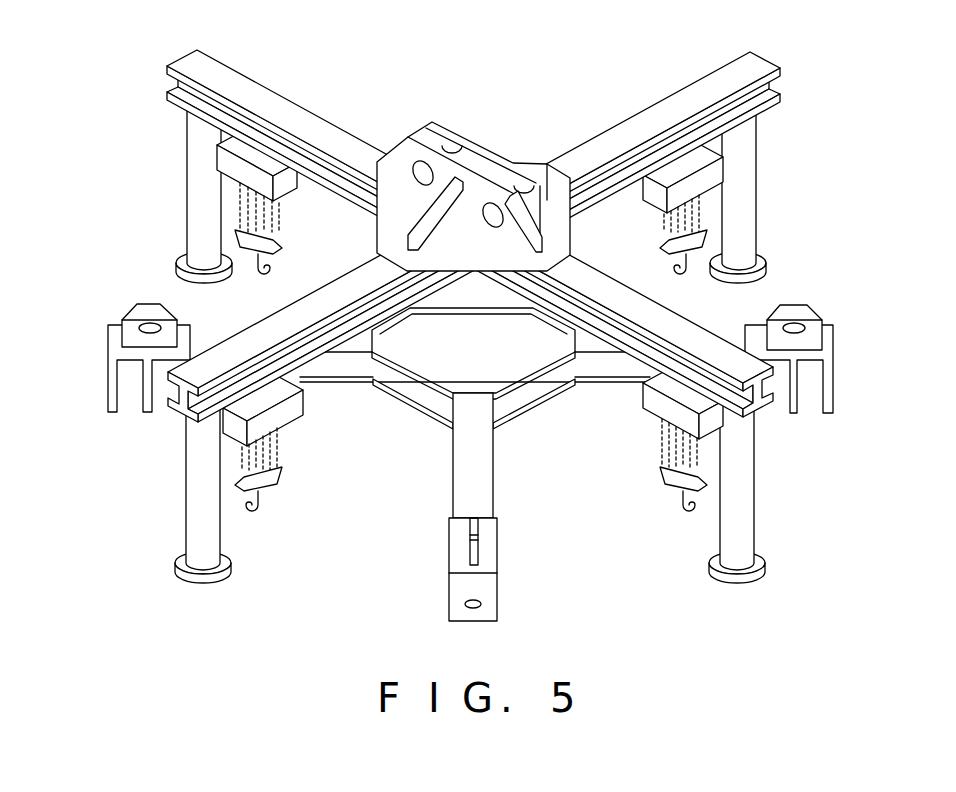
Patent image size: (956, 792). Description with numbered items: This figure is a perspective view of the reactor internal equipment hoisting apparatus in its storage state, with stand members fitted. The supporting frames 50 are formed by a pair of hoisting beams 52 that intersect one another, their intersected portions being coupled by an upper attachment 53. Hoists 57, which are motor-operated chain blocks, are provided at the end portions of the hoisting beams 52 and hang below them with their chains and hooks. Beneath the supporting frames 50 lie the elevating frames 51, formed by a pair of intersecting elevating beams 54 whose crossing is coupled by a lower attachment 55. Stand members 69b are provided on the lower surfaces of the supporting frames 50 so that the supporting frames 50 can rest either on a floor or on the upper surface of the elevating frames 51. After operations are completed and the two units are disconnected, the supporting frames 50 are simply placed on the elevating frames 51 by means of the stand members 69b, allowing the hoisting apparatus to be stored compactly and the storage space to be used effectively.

The supporting frames 50 is at (483, 312).
The elevating frames 51 is at (737, 323).
The hoisting beams 52 is at (263, 82).
The upper attachment 53 is at (463, 132).
The elevating beams 54 is at (347, 384).
The lower attachment 55 is at (532, 413).
The hoists 57 is at (293, 197).
The stand members 69b is at (189, 190).